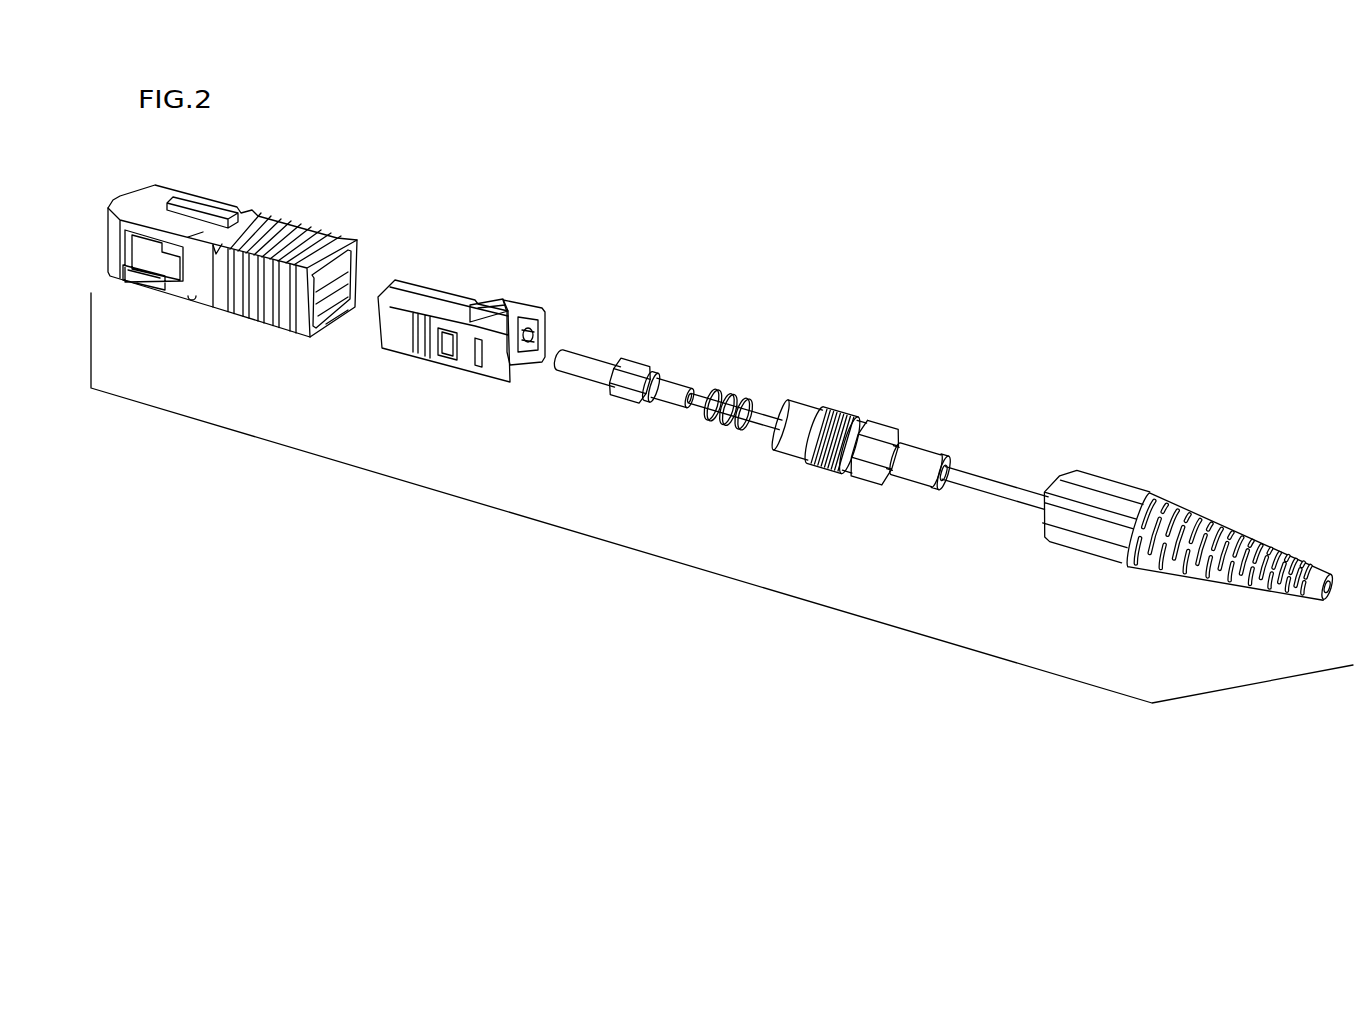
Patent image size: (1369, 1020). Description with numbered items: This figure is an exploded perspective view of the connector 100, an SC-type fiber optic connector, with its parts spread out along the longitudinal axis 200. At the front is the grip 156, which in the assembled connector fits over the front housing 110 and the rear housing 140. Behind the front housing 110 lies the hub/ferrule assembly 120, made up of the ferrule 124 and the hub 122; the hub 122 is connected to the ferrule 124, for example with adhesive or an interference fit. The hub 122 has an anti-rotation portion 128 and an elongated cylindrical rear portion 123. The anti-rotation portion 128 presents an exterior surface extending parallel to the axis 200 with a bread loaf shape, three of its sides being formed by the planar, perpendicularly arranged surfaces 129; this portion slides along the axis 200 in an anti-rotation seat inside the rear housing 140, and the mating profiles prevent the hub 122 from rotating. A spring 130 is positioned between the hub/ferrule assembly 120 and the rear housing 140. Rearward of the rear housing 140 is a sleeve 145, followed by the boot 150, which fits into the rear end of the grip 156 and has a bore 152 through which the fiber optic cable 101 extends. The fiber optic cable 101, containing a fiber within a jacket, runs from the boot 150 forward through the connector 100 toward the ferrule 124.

The connector 100 is at (613, 548).
The fiber optic cable 101 is at (993, 494).
The front housing 110 is at (456, 291).
The hub/ferrule assembly 120 is at (667, 380).
The hub 122 is at (646, 371).
The elongated cylindrical rear portion 123 is at (673, 407).
The ferrule 124 is at (594, 352).
The anti-rotation portion 128 is at (643, 408).
The planar surfaces 129 is at (644, 364).
The spring 130 is at (751, 397).
The rear housing 140 is at (873, 417).
The crimp sleeve 145 is at (934, 450).
The boot 150 is at (1195, 540).
The bore 152 is at (1325, 592).
The grip 156 is at (222, 203).
The longitudinal axis 200 is at (267, 249).